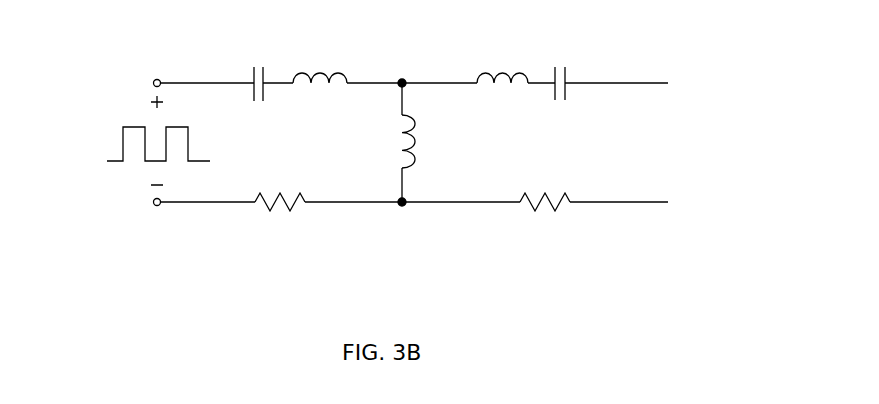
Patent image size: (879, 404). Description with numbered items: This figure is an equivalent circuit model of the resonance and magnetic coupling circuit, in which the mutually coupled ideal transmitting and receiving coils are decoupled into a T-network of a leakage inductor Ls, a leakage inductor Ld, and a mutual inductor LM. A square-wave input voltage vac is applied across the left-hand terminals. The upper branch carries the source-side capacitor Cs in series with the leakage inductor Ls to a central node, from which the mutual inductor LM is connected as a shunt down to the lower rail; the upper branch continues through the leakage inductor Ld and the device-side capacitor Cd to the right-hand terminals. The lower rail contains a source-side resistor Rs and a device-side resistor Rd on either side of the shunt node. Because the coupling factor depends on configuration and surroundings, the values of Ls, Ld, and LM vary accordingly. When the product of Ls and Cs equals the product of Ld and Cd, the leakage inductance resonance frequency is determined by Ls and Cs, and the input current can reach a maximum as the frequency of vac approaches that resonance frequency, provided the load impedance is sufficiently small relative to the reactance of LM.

The input voltage vac is at (143, 143).
The capacitor Cs is at (258, 68).
The leakage inductor Ls' Ls is at (320, 57).
The mutual inductor LM is at (386, 141).
The leakage inductor Ld' Ld is at (502, 57).
The capacitor Cd is at (557, 67).
The resistor Rs is at (280, 186).
The resistor Rd is at (545, 186).